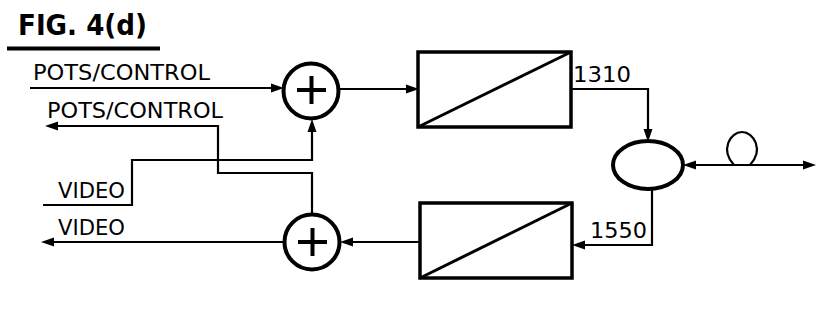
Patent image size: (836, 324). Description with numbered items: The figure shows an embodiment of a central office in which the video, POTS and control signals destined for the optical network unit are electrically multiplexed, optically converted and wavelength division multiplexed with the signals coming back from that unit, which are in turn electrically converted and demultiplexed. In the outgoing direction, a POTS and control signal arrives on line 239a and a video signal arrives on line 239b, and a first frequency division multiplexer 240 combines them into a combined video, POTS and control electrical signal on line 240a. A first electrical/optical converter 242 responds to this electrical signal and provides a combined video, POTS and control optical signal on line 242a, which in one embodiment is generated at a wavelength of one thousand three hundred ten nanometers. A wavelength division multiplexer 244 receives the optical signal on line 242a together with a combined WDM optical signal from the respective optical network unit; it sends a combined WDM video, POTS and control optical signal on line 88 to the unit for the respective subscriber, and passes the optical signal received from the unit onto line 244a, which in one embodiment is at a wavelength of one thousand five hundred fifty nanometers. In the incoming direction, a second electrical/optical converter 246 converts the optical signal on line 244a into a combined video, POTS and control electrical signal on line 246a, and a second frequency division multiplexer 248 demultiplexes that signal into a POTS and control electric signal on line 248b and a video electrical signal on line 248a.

The line 239a is at (235, 88).
The first frequency division multiplexer 240 is at (327, 67).
The line 240a is at (342, 95).
The first electrical/optical converter 242 is at (498, 51).
The line 242a is at (637, 88).
The wavelength division multiplexer 244 is at (664, 141).
The line 88 is at (786, 167).
The line 244a is at (638, 247).
The second electrical/optical converter 246 is at (498, 280).
The line 246a is at (367, 242).
The second frequency division multiplexer 248 is at (327, 267).
The line 248a is at (238, 245).
The line 248b is at (193, 128).
The line 239b is at (134, 177).